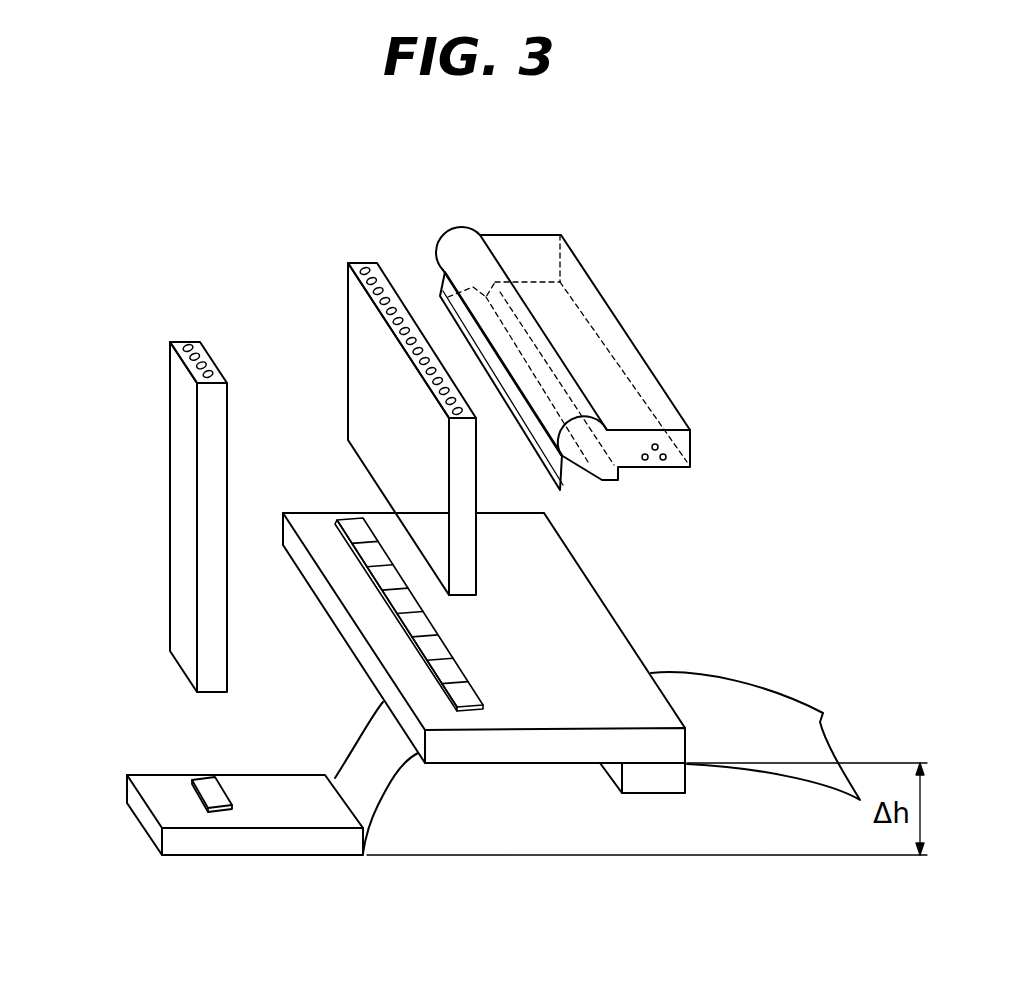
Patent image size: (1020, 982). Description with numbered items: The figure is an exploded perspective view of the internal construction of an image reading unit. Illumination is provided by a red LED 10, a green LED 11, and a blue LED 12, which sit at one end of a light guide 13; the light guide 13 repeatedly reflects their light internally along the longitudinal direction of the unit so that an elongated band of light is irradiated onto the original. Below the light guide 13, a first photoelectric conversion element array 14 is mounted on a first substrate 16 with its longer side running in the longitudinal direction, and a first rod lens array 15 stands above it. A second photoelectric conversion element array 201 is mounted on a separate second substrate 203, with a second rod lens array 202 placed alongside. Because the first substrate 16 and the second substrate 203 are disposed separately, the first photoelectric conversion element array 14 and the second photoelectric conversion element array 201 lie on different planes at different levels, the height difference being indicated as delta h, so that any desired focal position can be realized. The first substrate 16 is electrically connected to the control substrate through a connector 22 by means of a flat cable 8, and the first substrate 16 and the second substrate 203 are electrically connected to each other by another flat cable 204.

The flat cable 8 is at (767, 707).
The red LED 10 is at (658, 444).
The green LED 11 is at (665, 460).
The blue LED 12 is at (647, 460).
The light guide 13 is at (590, 272).
The first photoelectric conversion element array 14 is at (388, 610).
The first rod lens array 15 is at (347, 325).
The first substrate 16 is at (607, 637).
The connector 22 is at (660, 787).
The second photoelectric conversion element array 201 is at (192, 788).
The second rod lens array 202 is at (170, 490).
The second substrate 203 is at (142, 818).
The flat cable 204 is at (383, 777).